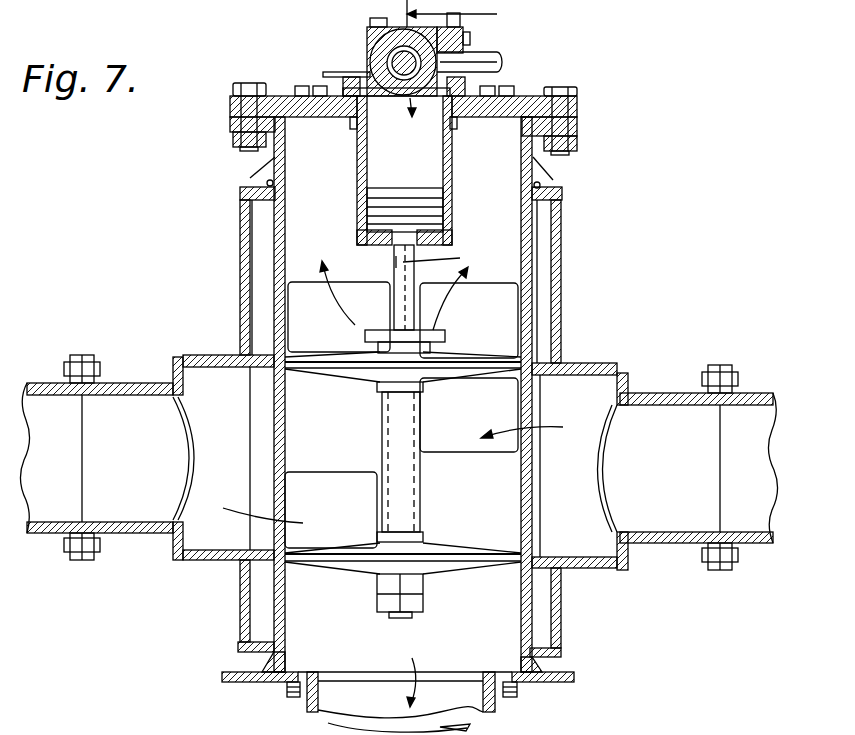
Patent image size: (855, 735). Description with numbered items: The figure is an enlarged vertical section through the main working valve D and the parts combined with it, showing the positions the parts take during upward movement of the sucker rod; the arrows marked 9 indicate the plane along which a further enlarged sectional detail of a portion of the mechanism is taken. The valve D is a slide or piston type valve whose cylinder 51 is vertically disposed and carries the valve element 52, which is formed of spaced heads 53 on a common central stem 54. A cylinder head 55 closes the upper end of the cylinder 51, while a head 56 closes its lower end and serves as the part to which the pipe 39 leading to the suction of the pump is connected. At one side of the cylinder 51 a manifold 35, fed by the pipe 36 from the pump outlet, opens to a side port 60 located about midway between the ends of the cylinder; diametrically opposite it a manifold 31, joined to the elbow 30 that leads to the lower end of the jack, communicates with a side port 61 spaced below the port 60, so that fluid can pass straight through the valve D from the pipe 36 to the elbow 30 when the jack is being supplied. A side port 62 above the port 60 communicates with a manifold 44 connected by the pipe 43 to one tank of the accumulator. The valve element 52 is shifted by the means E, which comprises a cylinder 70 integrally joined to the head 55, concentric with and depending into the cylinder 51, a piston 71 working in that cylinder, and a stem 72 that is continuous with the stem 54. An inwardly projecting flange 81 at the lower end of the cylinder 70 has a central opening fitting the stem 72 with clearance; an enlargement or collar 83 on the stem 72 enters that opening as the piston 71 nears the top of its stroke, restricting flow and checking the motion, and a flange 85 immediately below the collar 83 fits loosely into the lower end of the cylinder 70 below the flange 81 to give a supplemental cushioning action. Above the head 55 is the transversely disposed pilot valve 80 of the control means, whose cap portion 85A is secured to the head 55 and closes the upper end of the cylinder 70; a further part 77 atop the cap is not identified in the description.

The section line 9 is at (456, 134).
The elbow 30 is at (38, 534).
The manifold 31 is at (190, 563).
The manifold 35 is at (597, 570).
The pipe 36 is at (780, 371).
The pipe 39 is at (308, 704).
The pipe 43 is at (450, 320).
The manifold 44 is at (565, 324).
The cylinder 51 is at (274, 228).
The valve element 52 is at (322, 563).
The heads 53 is at (445, 382).
The stem 54 is at (386, 423).
The cylinder head 55 is at (287, 96).
The head 56 is at (503, 672).
The side port 60 is at (530, 397).
The side port 61 is at (300, 510).
The side port 62 is at (339, 306).
The cylinder 70 is at (453, 151).
The piston 71 is at (390, 181).
The stem 72 is at (400, 273).
The clevis bracket 77 is at (363, 43).
The pilot valve 80 is at (365, 59).
The inwardly projecting flange 81 is at (440, 229).
The collar 83 is at (405, 328).
The flange 85 is at (440, 340).
The cap portion 85A is at (432, 101).
The main valve D is at (244, 279).
The valve operating means E is at (454, 176).